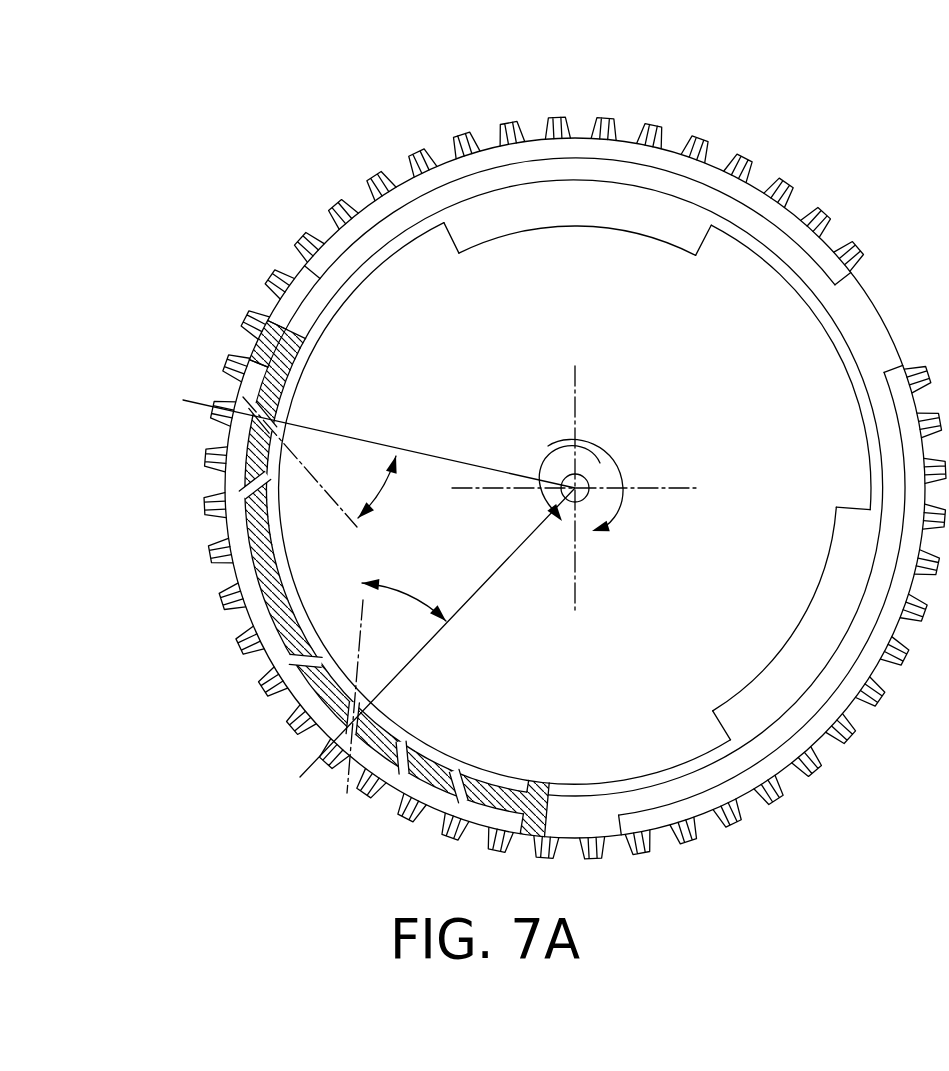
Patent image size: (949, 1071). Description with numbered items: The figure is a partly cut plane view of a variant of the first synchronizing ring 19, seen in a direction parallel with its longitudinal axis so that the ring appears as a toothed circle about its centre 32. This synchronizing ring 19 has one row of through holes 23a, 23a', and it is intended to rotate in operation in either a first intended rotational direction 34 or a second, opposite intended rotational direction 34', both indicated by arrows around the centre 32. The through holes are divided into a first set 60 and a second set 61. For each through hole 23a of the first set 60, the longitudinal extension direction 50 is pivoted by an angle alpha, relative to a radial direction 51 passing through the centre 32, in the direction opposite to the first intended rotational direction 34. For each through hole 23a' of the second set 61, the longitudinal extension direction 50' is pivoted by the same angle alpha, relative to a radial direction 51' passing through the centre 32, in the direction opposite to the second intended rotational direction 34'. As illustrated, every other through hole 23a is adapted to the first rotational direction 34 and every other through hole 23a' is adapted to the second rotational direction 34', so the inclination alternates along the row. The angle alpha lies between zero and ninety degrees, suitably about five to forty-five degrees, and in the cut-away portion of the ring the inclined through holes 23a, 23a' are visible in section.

The synchronizing ring 19 is at (868, 138).
The through holes 23a is at (243, 627).
The through holes 23a' is at (225, 520).
The centre 32 is at (587, 475).
The first intended rotational direction 34 is at (617, 463).
The second intended rotational direction 34' is at (530, 458).
The longitudinal extension direction 50 is at (575, 509).
The longitudinal extension direction 50' is at (210, 344).
The radial direction 51 is at (410, 657).
The radial direction 51' is at (353, 462).
The first set of through holes 60 is at (486, 757).
The second set of through holes 61 is at (438, 735).